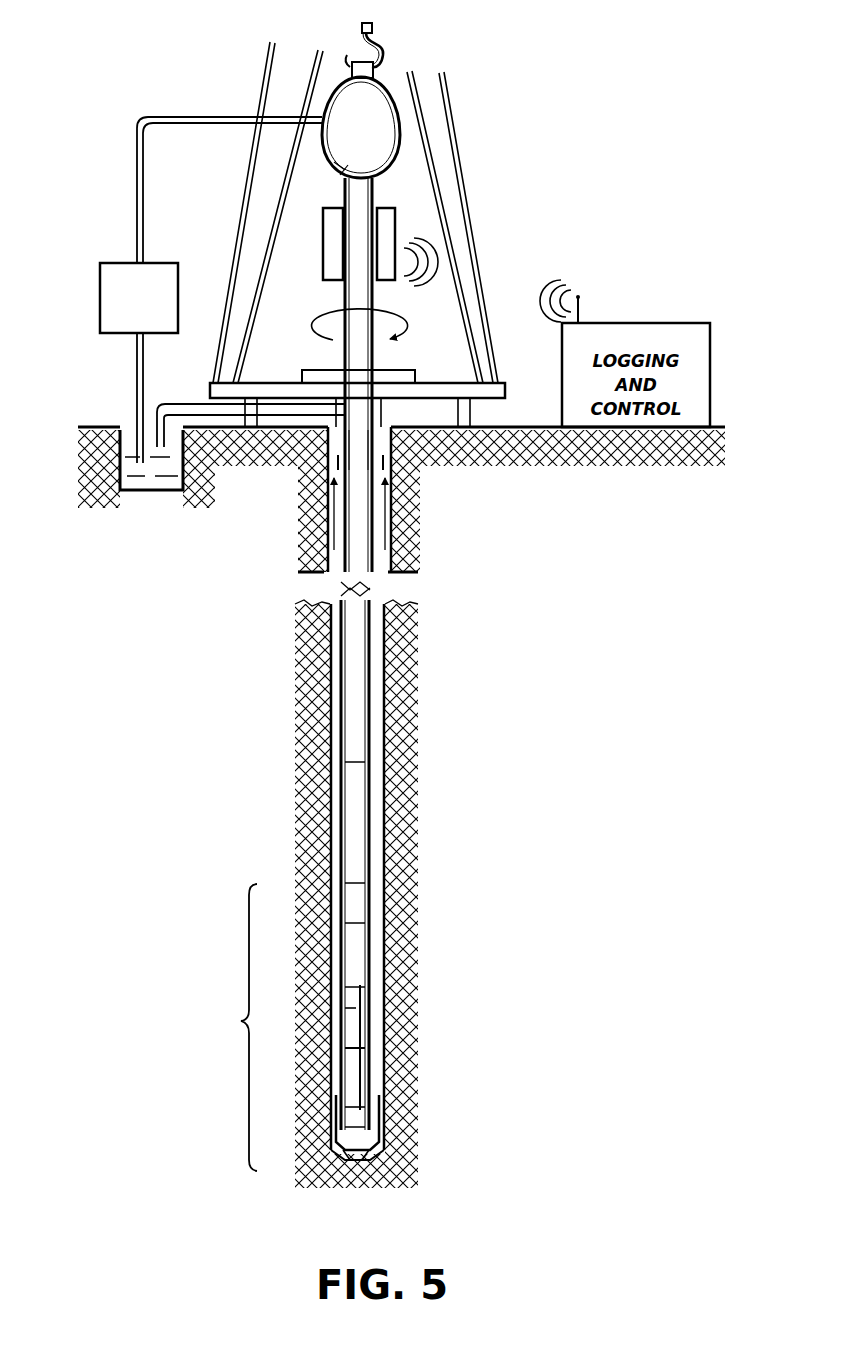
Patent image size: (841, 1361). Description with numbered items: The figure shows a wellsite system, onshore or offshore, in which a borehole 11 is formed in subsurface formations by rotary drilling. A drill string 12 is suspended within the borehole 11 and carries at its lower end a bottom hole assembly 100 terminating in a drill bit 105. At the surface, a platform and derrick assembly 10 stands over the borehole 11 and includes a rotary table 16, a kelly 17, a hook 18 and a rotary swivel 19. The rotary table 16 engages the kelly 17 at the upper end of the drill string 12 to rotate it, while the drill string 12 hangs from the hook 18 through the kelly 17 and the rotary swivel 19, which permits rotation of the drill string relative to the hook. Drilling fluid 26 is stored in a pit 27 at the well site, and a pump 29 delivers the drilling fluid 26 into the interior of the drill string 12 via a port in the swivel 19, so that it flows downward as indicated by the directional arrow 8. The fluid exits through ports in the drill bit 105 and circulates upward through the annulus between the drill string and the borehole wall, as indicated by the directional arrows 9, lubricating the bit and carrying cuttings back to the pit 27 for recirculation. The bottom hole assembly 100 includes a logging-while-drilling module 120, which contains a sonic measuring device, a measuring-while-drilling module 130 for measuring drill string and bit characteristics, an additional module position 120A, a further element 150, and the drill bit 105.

The platform and derrick assembly 10 is at (480, 106).
The hook 18 is at (362, 30).
The rotary swivel 19 is at (366, 240).
The drill string 12 is at (352, 422).
The kelly 17 is at (348, 353).
The rotary table 16 is at (387, 432).
The borehole 11 is at (405, 386).
The directional arrows 9 is at (352, 506).
The directional arrow 8 is at (348, 511).
The pump 29 is at (113, 336).
The pit 27 is at (122, 425).
The drilling fluid 26 is at (152, 494).
The bottom hole assembly 100 is at (241, 1021).
The logging-while-drilling module 120 is at (360, 945).
The measuring-while-drilling module 130 is at (360, 991).
The additional LWD/MWD module 120A is at (366, 1028).
The sensor 150 is at (360, 1078).
The drill bit 105 is at (355, 1119).